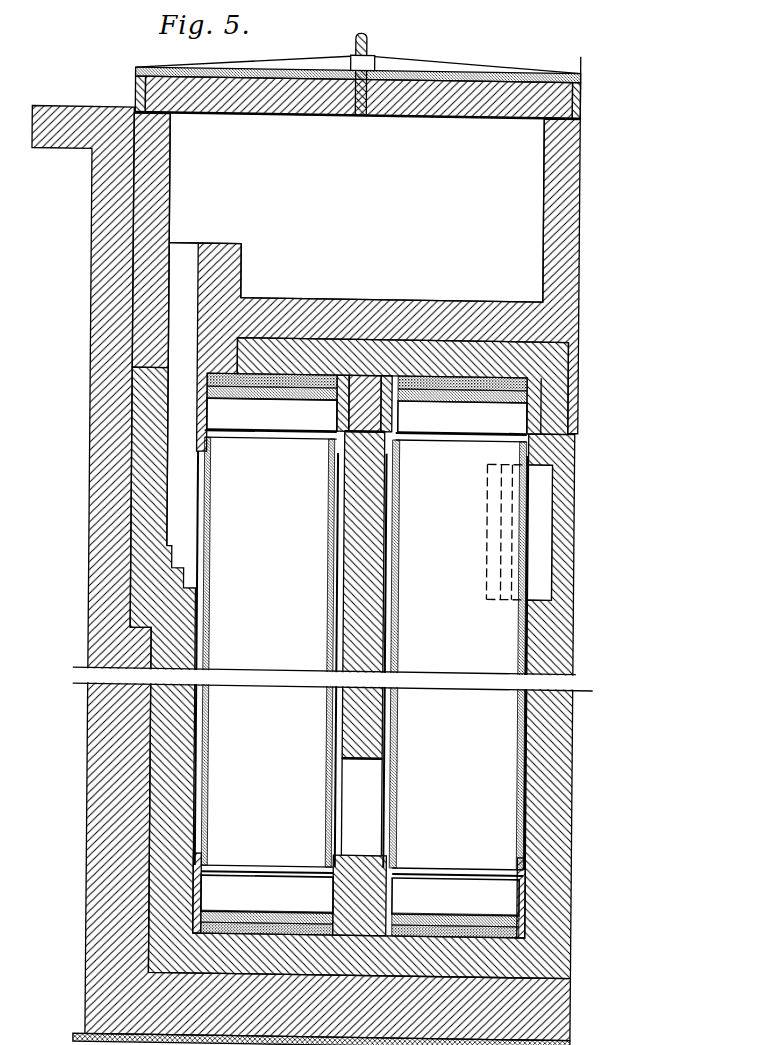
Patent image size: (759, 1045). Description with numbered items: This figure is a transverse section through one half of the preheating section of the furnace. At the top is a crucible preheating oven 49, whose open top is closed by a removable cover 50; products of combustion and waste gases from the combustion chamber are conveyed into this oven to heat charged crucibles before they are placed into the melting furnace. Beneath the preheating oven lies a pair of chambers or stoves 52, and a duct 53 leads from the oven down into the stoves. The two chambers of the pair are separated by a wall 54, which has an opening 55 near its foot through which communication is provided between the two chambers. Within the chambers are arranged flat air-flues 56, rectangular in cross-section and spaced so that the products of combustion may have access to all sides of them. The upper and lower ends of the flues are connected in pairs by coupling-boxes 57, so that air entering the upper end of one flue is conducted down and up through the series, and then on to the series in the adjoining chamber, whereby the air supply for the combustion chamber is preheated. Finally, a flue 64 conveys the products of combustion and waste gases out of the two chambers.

The crucible preheating oven 49 is at (356, 208).
The removable cover 50 is at (420, 117).
The chamber or stove 52 is at (527, 627).
The duct 53 is at (181, 500).
The wall 54 is at (368, 518).
The opening 55 is at (360, 807).
The flat air-flue 56 is at (364, 653).
The coupling-box 57 is at (364, 655).
The flue 64 is at (535, 528).